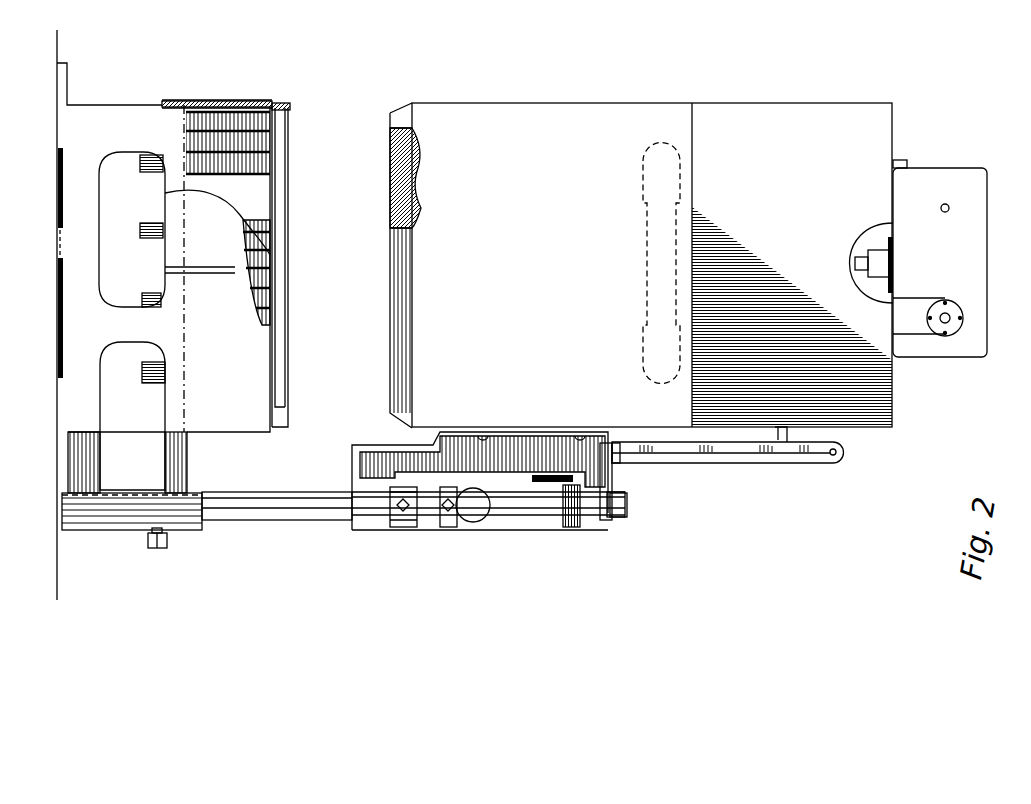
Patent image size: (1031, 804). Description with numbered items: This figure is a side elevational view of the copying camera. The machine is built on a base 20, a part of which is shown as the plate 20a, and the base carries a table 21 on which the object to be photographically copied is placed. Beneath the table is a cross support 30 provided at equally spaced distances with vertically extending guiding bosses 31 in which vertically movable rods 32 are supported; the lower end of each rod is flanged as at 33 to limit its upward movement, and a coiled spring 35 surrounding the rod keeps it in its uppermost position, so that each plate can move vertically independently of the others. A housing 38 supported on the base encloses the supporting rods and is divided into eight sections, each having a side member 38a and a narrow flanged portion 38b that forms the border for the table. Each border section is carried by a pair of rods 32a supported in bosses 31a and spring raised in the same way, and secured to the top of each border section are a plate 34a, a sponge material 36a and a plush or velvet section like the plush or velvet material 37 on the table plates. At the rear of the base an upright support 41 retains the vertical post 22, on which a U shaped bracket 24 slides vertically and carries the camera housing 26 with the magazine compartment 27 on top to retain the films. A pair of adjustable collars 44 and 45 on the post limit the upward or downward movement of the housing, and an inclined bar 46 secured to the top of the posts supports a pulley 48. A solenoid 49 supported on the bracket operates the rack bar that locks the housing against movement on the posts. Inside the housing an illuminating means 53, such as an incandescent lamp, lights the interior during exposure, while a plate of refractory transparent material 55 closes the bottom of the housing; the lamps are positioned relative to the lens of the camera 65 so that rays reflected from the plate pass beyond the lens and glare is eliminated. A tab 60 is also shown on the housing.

The base 20 is at (56, 227).
The frame plate 20a is at (131, 103).
The table 21 is at (289, 102).
The upright post 22 is at (282, 522).
The bracket 24 is at (513, 478).
The camera housing 26 is at (640, 100).
The magazine compartment 27 is at (990, 361).
The cross support 30 is at (188, 444).
The guiding boss 31 is at (157, 172).
The boss 31a is at (184, 139).
The rod 32 is at (256, 166).
The rod 32a is at (232, 108).
The flange 33 is at (149, 297).
The plate 34a is at (277, 187).
The coiled spring 35 is at (231, 211).
The sponge material 36a is at (279, 145).
The plush or velvet material 37 is at (290, 240).
The housing 38 is at (208, 97).
The side member 38a is at (246, 99).
The narrow flanged portion 38b is at (272, 107).
The upright support 41 is at (131, 515).
The adjustable collar 44 is at (405, 528).
The adjustable collar 45 is at (447, 528).
The inclined bar 46 is at (727, 465).
The pulley 48 is at (846, 458).
The solenoid 49 is at (477, 522).
The illuminating means 53 is at (648, 180).
The plate of refractory transparent material 55 is at (391, 200).
The tab 60 is at (903, 166).
The camera 65 is at (874, 250).